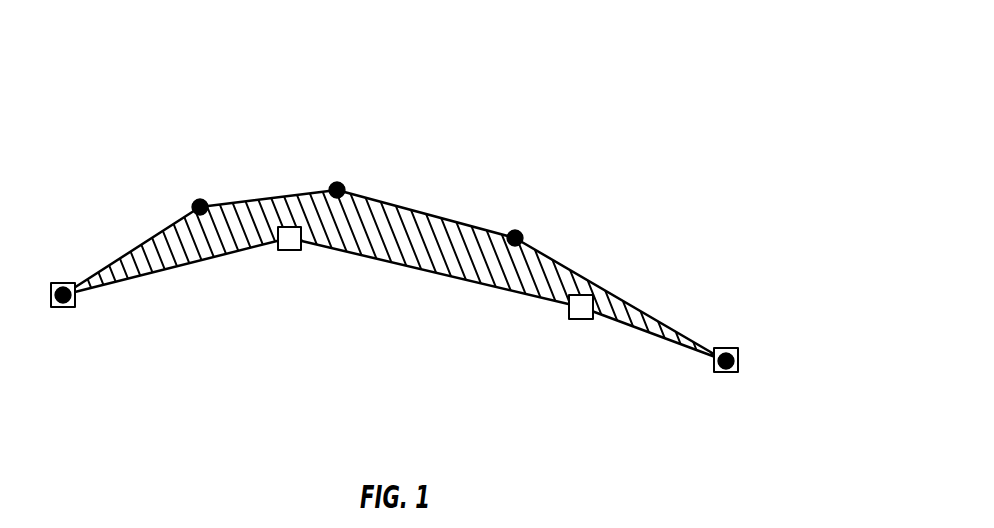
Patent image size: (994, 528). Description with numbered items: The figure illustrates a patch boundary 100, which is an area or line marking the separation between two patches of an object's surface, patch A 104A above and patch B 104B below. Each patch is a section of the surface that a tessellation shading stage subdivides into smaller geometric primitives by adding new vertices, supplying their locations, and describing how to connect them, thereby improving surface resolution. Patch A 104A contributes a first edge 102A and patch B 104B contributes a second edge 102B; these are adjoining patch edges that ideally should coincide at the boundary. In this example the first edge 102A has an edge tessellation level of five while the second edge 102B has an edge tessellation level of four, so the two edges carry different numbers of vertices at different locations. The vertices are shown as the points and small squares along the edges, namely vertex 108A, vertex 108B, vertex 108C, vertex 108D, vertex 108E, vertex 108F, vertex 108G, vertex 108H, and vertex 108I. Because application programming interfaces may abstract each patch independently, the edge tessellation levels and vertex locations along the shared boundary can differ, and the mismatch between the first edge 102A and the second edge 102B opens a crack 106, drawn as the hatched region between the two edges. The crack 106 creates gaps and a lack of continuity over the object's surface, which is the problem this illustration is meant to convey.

The patch boundary 100 is at (137, 86).
The edge-1 102A is at (415, 208).
The edge-2 102B is at (198, 260).
The patch A 104A is at (427, 98).
The patch B 104B is at (418, 354).
The crack 106 is at (448, 238).
The vertex 108A is at (50, 283).
The vertex 108B is at (200, 207).
The vertex 108C is at (337, 190).
The vertex 108D is at (515, 238).
The vertex 108E is at (738, 348).
The vertex 108F is at (727, 373).
The vertex 108G is at (578, 319).
The vertex 108H is at (300, 250).
The vertex 108I is at (63, 307).